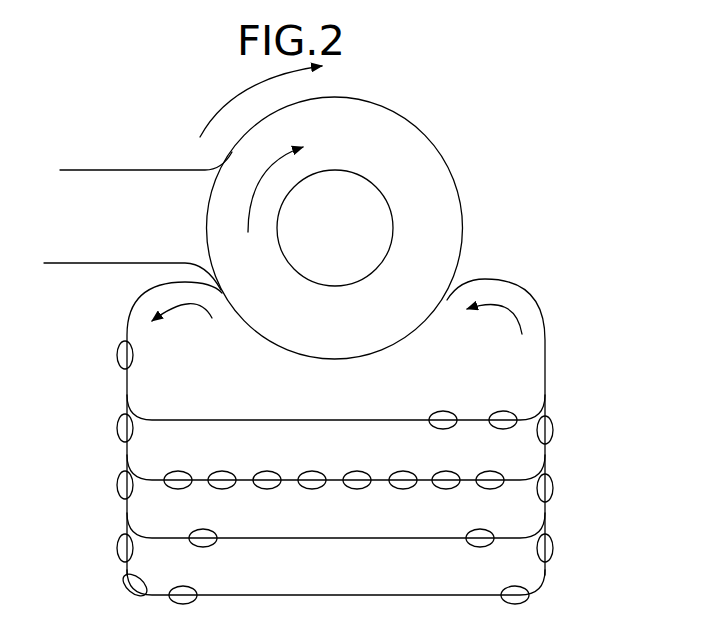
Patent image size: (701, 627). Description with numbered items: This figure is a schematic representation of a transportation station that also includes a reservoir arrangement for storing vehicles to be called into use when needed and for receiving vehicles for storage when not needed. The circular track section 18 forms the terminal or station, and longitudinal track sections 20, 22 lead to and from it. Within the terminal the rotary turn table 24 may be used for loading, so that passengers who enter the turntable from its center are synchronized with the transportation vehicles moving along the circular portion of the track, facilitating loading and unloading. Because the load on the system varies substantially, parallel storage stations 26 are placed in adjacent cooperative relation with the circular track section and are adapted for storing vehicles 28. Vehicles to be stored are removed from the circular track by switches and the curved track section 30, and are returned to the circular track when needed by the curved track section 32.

The circular track section 18 is at (400, 118).
The longitudinal track section 20 is at (145, 168).
The longitudinal track section 22 is at (136, 245).
The rotary turn table 24 is at (425, 150).
The parallel storage stations 26 is at (319, 420).
The vehicles 28 is at (355, 484).
The curved track section 30 is at (200, 288).
The curved track section 32 is at (508, 283).